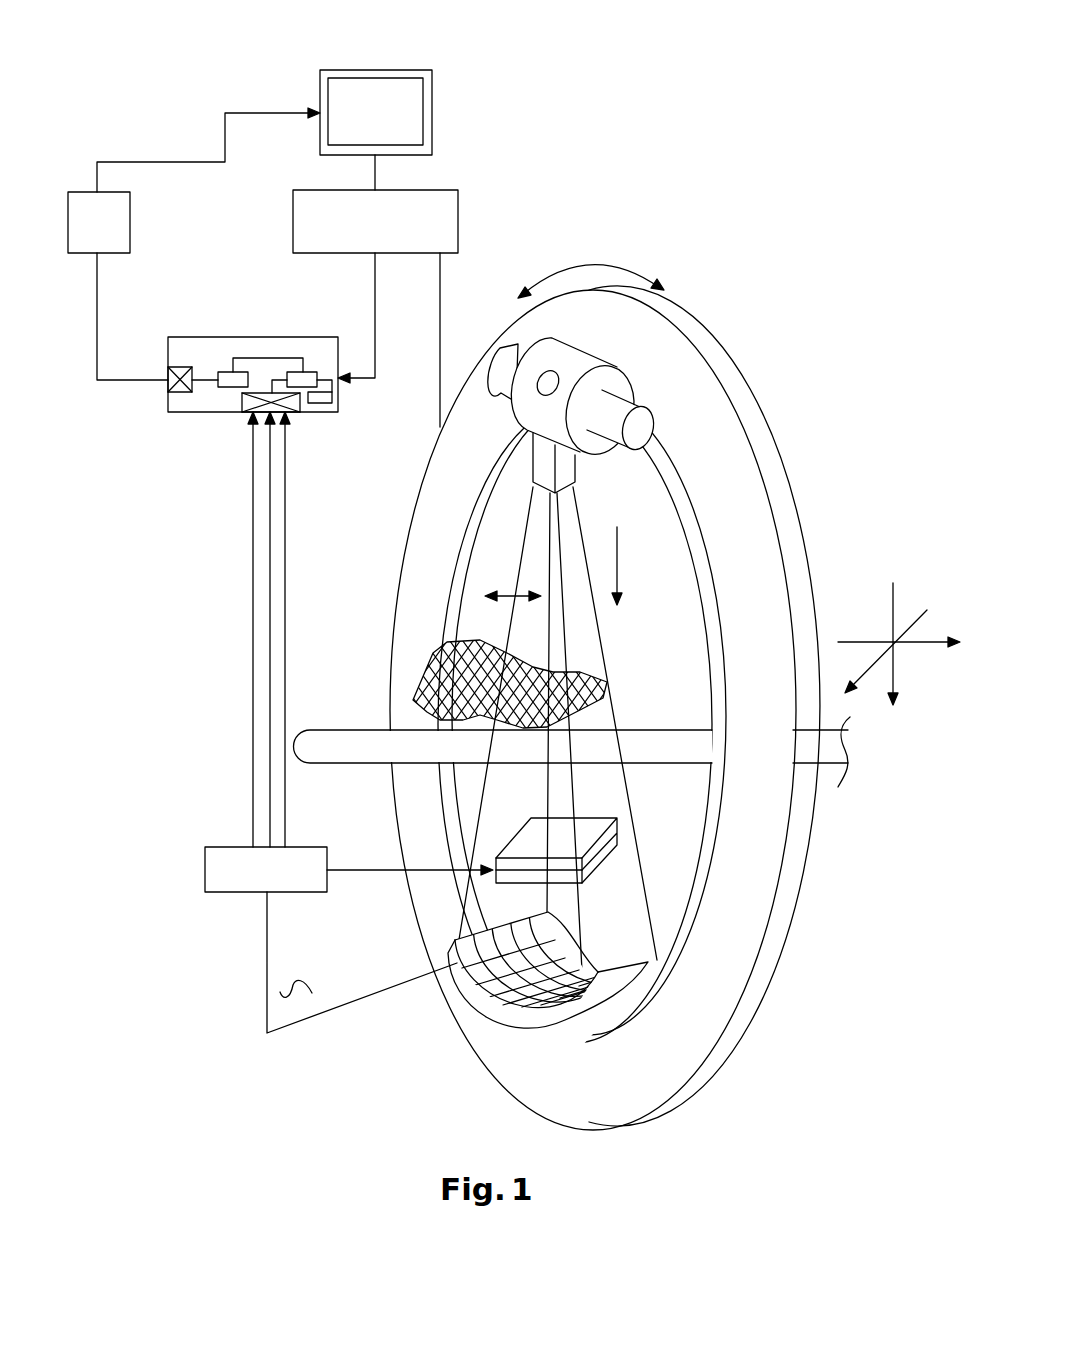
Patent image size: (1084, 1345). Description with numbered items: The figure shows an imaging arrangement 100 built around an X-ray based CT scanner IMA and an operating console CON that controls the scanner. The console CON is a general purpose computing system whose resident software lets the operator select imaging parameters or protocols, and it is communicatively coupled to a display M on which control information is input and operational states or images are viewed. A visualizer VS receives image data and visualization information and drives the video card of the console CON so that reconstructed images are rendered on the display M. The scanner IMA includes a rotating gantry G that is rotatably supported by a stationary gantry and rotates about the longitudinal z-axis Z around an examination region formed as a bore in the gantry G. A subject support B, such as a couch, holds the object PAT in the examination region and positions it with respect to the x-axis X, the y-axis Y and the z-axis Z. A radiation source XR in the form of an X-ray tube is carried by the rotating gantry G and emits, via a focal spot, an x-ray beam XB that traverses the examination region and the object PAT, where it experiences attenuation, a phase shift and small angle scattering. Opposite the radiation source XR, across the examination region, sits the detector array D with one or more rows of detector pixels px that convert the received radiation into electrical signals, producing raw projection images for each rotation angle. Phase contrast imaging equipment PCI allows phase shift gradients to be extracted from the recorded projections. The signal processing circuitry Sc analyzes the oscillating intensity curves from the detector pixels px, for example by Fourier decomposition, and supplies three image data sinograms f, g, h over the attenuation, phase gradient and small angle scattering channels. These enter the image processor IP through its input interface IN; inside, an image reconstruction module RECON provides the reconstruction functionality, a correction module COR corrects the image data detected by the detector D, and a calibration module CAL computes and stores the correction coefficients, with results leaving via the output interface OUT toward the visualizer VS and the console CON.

The imaging arrangement 100 is at (183, 103).
The display M is at (412, 117).
The operating console CON is at (440, 232).
The visualizer VS is at (93, 238).
The image processor IP is at (310, 413).
The output interface OUT is at (165, 395).
The image reconstruction module RECON is at (226, 372).
The correction module COR is at (294, 372).
The calibration module CAL is at (333, 403).
The input interface IN is at (242, 398).
The attenuation image data sinogram f is at (266, 532).
The phase gradient image data sinogram g is at (252, 609).
The small angle scattering image data sinogram h is at (287, 530).
The rotating gantry G is at (728, 377).
The X-ray based CT scanner IMA is at (712, 207).
The subject support B is at (375, 745).
The radiation source XR is at (606, 350).
The object PAT is at (432, 657).
The x-ray beam XB is at (575, 633).
The z-axis Z is at (719, 642).
The x-axis X is at (899, 656).
The y-axis Y is at (906, 648).
The signal processing circuitry Sc is at (218, 878).
The phase contrast imaging equipment PCI is at (617, 818).
The detector array D is at (470, 998).
The detector pixels px is at (470, 938).